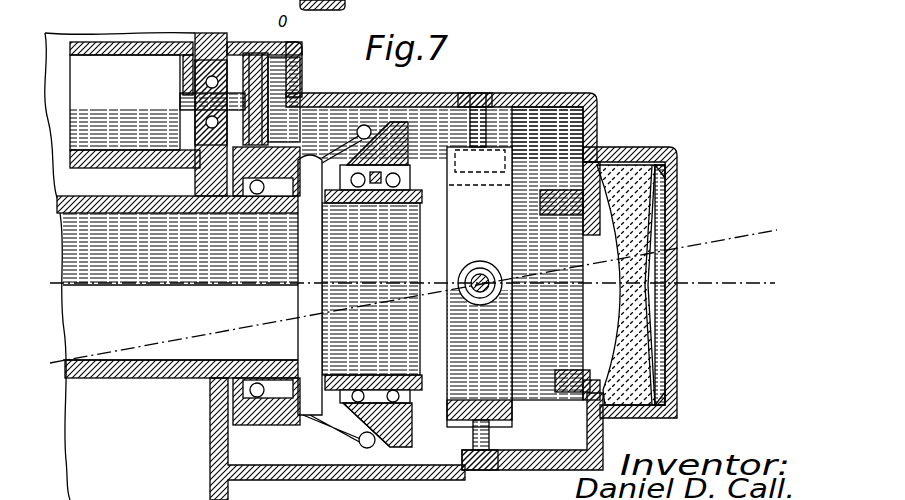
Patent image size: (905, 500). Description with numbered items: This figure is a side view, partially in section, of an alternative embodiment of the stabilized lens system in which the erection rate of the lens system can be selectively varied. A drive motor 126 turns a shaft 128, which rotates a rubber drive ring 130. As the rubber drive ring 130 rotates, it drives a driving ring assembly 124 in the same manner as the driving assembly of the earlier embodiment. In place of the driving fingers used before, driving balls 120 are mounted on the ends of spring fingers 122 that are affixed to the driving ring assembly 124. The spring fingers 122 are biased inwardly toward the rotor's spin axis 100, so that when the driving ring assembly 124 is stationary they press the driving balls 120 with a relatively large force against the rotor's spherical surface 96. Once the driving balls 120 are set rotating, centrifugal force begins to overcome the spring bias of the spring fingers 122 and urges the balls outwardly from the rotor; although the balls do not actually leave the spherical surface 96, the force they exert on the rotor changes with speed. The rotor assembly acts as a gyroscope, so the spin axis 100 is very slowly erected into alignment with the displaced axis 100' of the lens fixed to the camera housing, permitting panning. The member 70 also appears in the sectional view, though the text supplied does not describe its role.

The clutch cone member 70 is at (413, 112).
The spherical surface 96 is at (380, 125).
The spin axis 100 is at (412, 275).
The displaced axis 100' is at (413, 290).
The driving balls 120 is at (366, 124).
The spring fingers 122 is at (337, 128).
The driving ring assembly 124 is at (246, 429).
The drive motor 126 is at (128, 62).
The shaft 128 is at (183, 100).
The rubber drive ring 130 is at (256, 60).